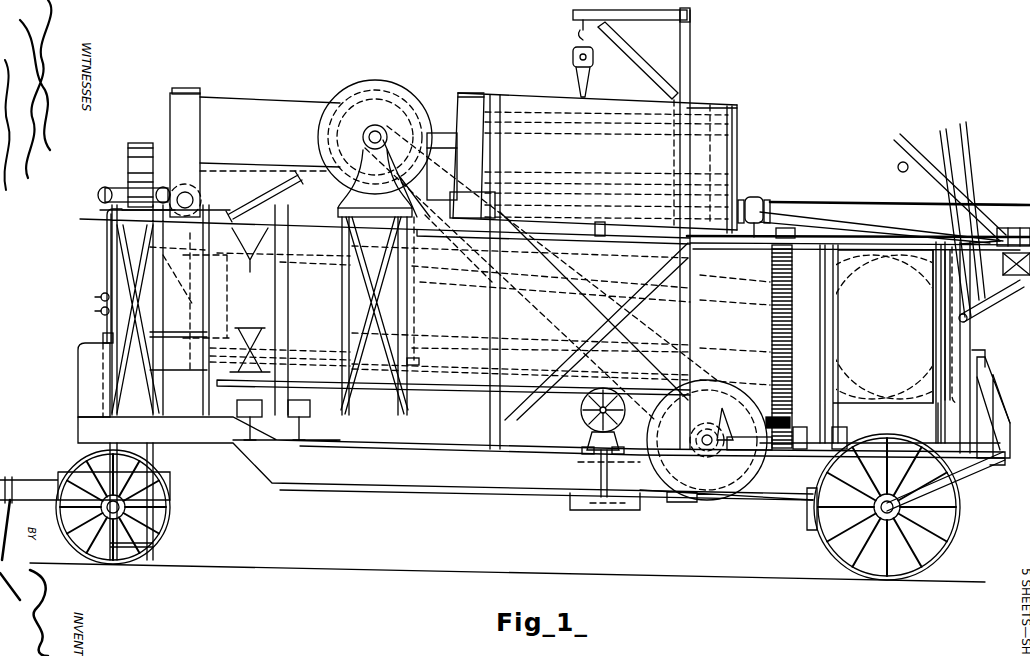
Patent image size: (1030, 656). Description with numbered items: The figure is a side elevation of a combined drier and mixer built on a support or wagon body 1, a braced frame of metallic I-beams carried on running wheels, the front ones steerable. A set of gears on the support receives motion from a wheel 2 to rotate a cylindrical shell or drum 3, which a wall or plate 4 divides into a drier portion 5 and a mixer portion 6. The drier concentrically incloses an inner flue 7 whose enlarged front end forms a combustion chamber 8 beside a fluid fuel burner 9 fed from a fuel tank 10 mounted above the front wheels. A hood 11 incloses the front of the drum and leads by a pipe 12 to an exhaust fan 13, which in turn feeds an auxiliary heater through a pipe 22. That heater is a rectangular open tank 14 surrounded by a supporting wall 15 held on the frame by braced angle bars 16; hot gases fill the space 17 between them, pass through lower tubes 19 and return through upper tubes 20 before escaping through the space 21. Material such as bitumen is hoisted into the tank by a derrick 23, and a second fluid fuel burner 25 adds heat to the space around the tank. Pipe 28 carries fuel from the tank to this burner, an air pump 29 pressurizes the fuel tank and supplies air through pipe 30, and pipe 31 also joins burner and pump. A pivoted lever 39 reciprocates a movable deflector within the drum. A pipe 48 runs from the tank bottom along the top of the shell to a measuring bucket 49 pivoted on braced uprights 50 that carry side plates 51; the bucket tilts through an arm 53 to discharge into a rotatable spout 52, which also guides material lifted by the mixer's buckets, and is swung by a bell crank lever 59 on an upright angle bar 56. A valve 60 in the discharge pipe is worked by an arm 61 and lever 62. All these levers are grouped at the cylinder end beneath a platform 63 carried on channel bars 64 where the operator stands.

The support or wagon body 1 is at (505, 468).
The wheel 2 is at (657, 421).
The rotatable cylindrical shell or drum 3 is at (850, 359).
The wall or plate 4 is at (876, 344).
The drier portion 5 is at (397, 311).
The mixer portion 6 is at (936, 342).
The inner flue 7 is at (300, 336).
The combustion chamber 8 is at (185, 335).
The fluid fuel burner 9 is at (108, 290).
The tank 10 is at (94, 380).
The hood 11 is at (218, 310).
The pipe 12 is at (219, 152).
The exhaust fan 13 is at (300, 141).
The rectangular open tank 14 is at (711, 147).
The supporting wall 15 is at (595, 161).
The braced angle bars 16 is at (494, 300).
The space 17 is at (490, 216).
The tubes 19 is at (606, 186).
The tubes 20 is at (606, 120).
The space 21 is at (472, 95).
The pipe 22 is at (461, 175).
The derrick 23 is at (637, 21).
The fluid fuel burner 25 is at (400, 185).
The pipe 28 is at (270, 192).
The air pump 29 is at (584, 420).
The pipe 30 is at (450, 368).
The pipe 31 is at (441, 293).
The pivoted lever 39 is at (944, 160).
The pipe 48 is at (890, 222).
The measuring bucket 49 is at (1005, 286).
The braced uprights 50 is at (966, 433).
The side plates 51 is at (1018, 240).
The spout 52 is at (990, 369).
The arm 53 is at (983, 222).
The upright angle bar 56 is at (936, 429).
The bell crank lever 59 is at (896, 140).
The valve 60 is at (757, 197).
The arm 61 is at (866, 201).
The lever 62 is at (963, 128).
The platform 63 is at (798, 262).
The channel bars 64 is at (878, 255).